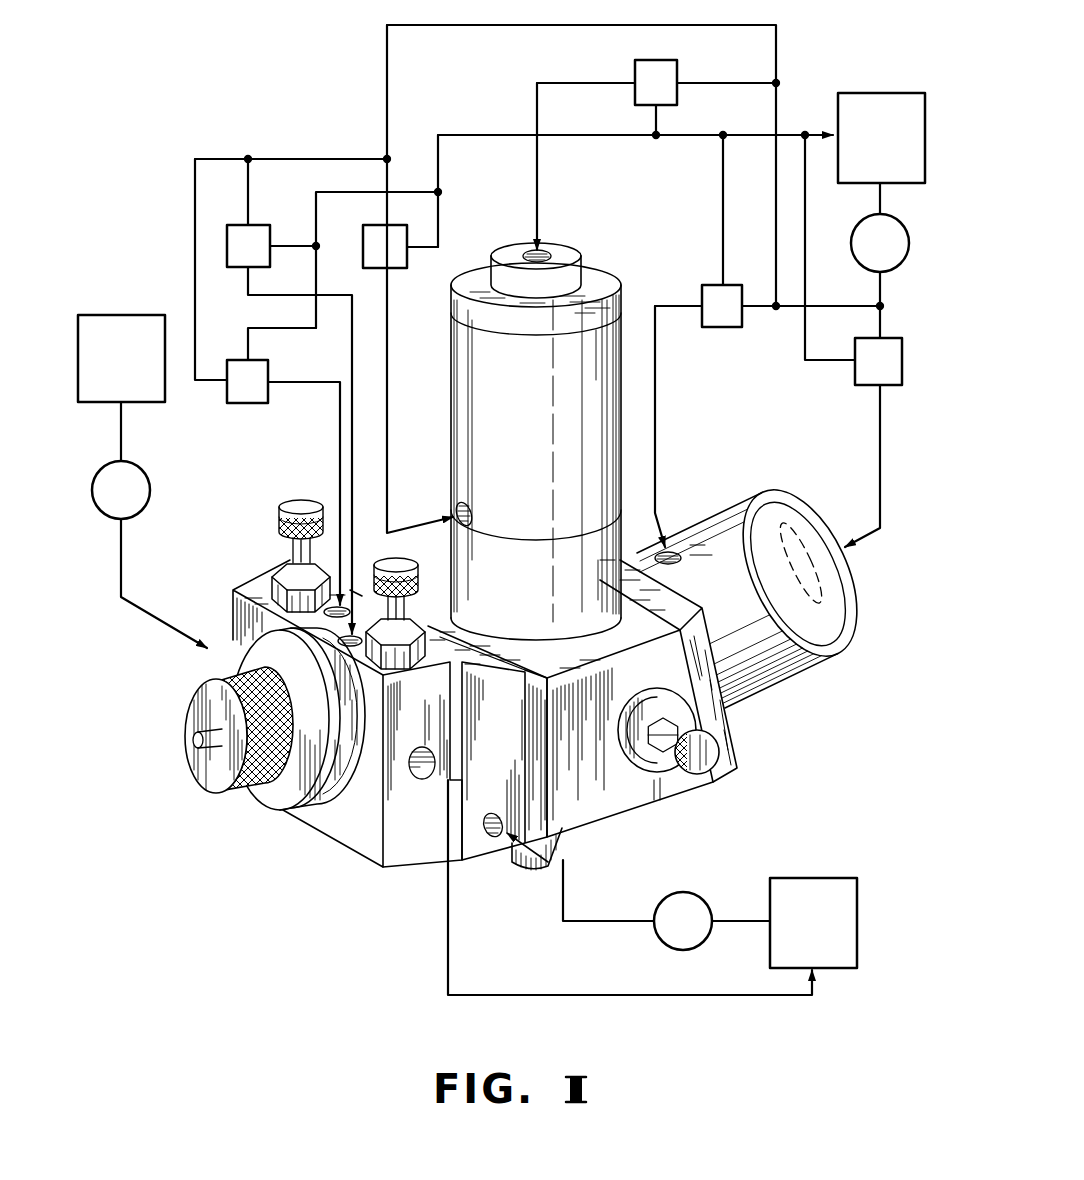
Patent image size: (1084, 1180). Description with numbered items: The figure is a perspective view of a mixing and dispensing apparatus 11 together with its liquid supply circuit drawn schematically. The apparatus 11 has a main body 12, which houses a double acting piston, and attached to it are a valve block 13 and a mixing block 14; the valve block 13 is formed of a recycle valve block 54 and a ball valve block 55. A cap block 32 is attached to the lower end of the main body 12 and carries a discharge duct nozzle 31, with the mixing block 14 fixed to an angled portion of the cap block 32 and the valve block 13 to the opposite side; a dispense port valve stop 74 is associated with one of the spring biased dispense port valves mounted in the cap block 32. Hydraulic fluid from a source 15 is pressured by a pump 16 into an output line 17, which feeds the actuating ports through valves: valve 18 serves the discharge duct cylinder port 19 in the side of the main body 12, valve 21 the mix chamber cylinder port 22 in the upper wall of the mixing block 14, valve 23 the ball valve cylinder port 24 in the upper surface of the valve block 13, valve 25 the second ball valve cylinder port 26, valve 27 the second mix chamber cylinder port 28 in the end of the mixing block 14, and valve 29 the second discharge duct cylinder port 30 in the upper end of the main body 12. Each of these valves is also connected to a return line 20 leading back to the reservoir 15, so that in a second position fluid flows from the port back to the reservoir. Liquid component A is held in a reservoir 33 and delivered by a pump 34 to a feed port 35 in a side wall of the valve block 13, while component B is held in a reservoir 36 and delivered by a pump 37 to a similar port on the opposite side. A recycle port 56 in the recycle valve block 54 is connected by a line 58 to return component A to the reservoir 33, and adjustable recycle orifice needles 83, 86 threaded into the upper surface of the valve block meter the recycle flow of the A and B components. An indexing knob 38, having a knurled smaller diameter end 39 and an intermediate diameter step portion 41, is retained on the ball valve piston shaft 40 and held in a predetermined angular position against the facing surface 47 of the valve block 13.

The mixing and dispensing apparatus 11 is at (863, 782).
The main body 12 is at (620, 258).
The valve block 13 is at (498, 858).
The mixing block 14 is at (827, 667).
The source of hydraulic fluid 15 is at (903, 97).
The pump 16 is at (905, 233).
The output line 17 is at (882, 287).
The valve 18 is at (395, 270).
The discharge duct cylinder port 19 is at (468, 503).
The return line 20 is at (440, 162).
The valve 21 is at (703, 287).
The mix chamber cylinder port 22 is at (672, 546).
The valve 23 is at (233, 404).
The ball valve cylinder port 24 is at (333, 620).
The valve 25 is at (262, 225).
The second ball valve cylinder port 26 is at (350, 649).
The valve 27 is at (903, 365).
The second mix chamber cylinder port 28 is at (815, 560).
The valve 29 is at (636, 66).
The second discharge duct cylinder port 30 is at (547, 252).
The discharge duct nozzle 31 is at (563, 843).
The cap block 32 is at (622, 787).
The reservoir 33 is at (848, 930).
The pump 34 is at (665, 947).
The feed port 35 is at (488, 834).
The reservoir 36 is at (127, 318).
The pump 37 is at (103, 512).
The indexing knob 38 is at (220, 787).
The smaller diameter end 39 is at (255, 790).
The ball valve piston shaft 40 is at (196, 742).
The intermediate diameter step portion 41 is at (275, 807).
The facing surface 47 is at (363, 843).
The recycle valve block 54 is at (427, 842).
The ball valve block 55 is at (505, 738).
The recycle port 56 is at (413, 753).
The line 58 is at (693, 998).
The dispense port valve stop 74 is at (710, 752).
The adjustable recycle orifice needle 83 is at (408, 607).
The adjustable recycle orifice needle 86 is at (298, 553).